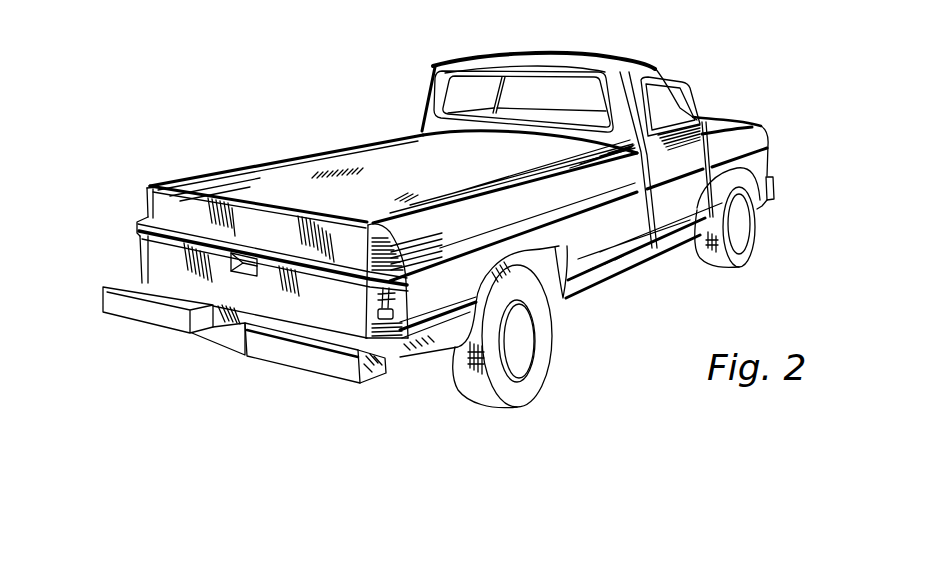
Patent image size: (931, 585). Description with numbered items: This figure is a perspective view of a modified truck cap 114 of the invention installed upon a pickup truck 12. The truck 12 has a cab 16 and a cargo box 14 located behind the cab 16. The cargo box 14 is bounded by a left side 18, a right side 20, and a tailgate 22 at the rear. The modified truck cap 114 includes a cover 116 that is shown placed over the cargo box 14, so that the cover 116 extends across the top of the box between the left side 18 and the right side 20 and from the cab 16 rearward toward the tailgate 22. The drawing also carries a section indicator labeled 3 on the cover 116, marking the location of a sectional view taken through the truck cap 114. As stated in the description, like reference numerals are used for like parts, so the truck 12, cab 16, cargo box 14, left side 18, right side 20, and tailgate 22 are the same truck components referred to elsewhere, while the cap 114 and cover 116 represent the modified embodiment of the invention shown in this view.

The section line 3- 3 is at (437, 216).
The truck 12 is at (732, 123).
The cargo box 14 is at (497, 221).
The cab 16 is at (617, 64).
The left side 18 is at (143, 201).
The right side 20 is at (594, 188).
The tailgate 22 is at (313, 331).
The modified truck cap 114 is at (364, 94).
The cover 116 is at (357, 171).